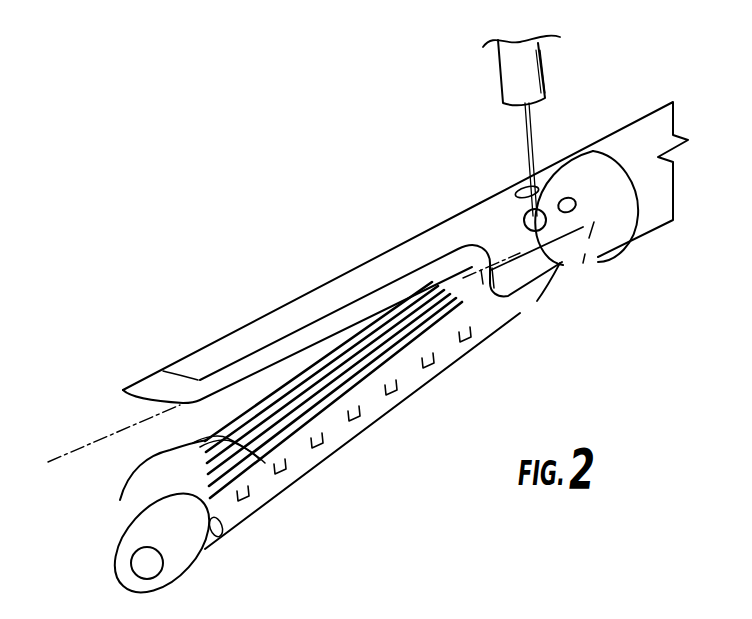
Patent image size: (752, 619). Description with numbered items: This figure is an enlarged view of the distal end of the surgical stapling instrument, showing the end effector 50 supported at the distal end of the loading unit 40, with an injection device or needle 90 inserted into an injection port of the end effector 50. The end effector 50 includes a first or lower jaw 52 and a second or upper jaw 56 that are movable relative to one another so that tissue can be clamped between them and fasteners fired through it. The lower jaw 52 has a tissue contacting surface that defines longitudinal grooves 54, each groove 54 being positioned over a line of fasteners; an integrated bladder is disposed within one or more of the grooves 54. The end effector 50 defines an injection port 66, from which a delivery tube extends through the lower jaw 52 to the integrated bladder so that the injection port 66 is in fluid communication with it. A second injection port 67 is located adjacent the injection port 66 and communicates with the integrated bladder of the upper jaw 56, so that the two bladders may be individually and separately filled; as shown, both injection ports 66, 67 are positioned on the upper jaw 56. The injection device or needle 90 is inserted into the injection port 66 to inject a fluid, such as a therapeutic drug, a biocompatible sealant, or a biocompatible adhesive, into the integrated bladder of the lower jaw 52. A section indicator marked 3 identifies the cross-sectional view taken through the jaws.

The loading unit 40 is at (599, 167).
The end effector 50 is at (298, 401).
The first or lower jaw 52 is at (298, 446).
The longitudinal grooves 54 is at (167, 452).
The second or upper jaw 56 is at (368, 266).
The injection port 66 is at (573, 199).
The second injection port 67 is at (539, 209).
The injection device or needle 90 is at (486, 88).
The section line 3-3 (view of FIG. 3) 3 is at (515, 253).